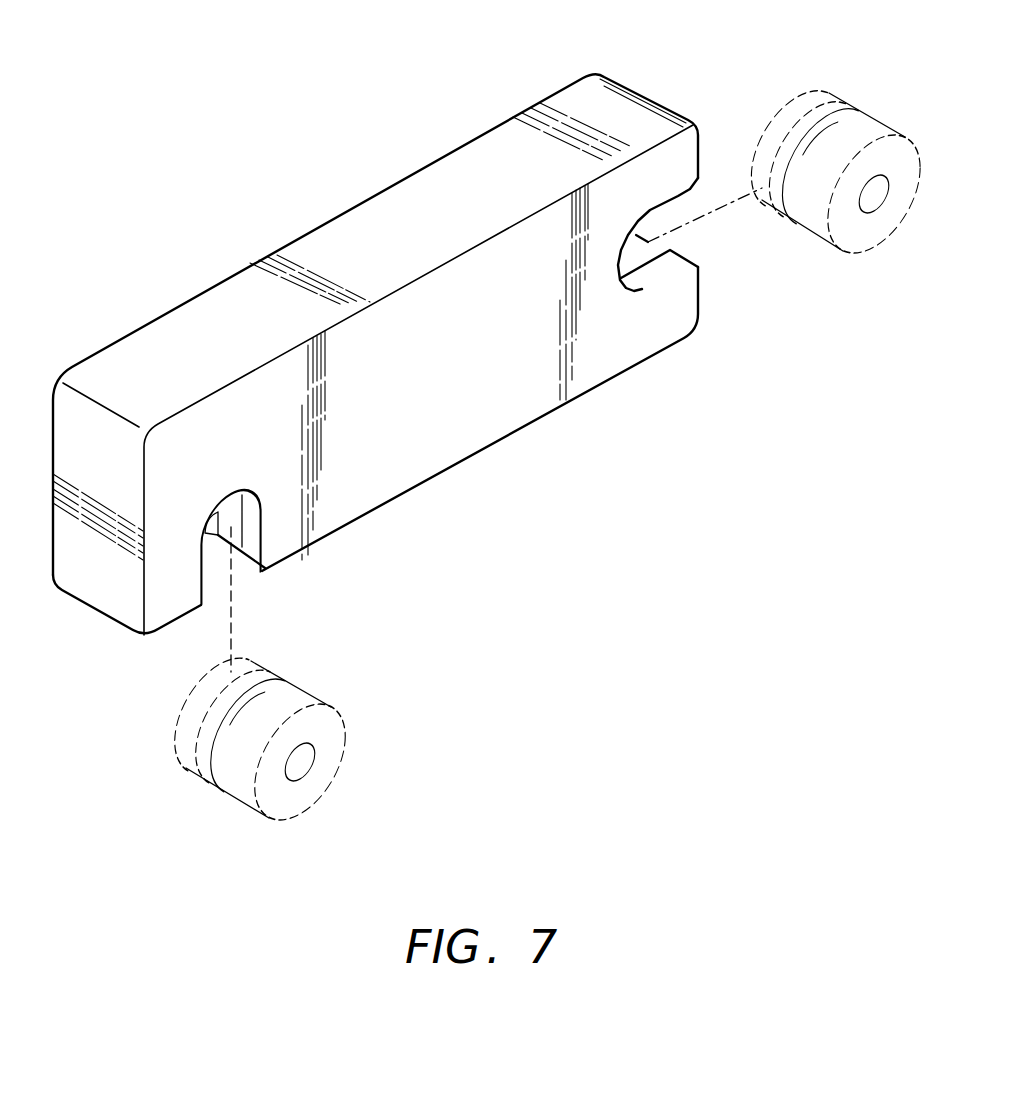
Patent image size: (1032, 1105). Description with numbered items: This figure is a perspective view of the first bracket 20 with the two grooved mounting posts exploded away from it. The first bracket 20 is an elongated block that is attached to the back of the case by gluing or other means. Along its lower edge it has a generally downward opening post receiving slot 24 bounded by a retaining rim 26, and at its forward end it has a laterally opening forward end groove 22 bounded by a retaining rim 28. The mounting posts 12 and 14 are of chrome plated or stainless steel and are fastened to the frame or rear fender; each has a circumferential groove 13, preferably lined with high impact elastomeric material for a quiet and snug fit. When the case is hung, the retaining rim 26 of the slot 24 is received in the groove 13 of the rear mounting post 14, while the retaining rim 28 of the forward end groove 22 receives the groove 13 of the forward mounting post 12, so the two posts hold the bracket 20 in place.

The mounting post 12 is at (818, 228).
The circumferential groove 13 is at (822, 108).
The mounting post 14 is at (303, 697).
The first bracket 20 is at (431, 414).
The forward end groove 22 is at (635, 258).
The post receiving slot 24 is at (237, 496).
The retaining rim 26 is at (255, 552).
The retaining rim 28 is at (668, 265).